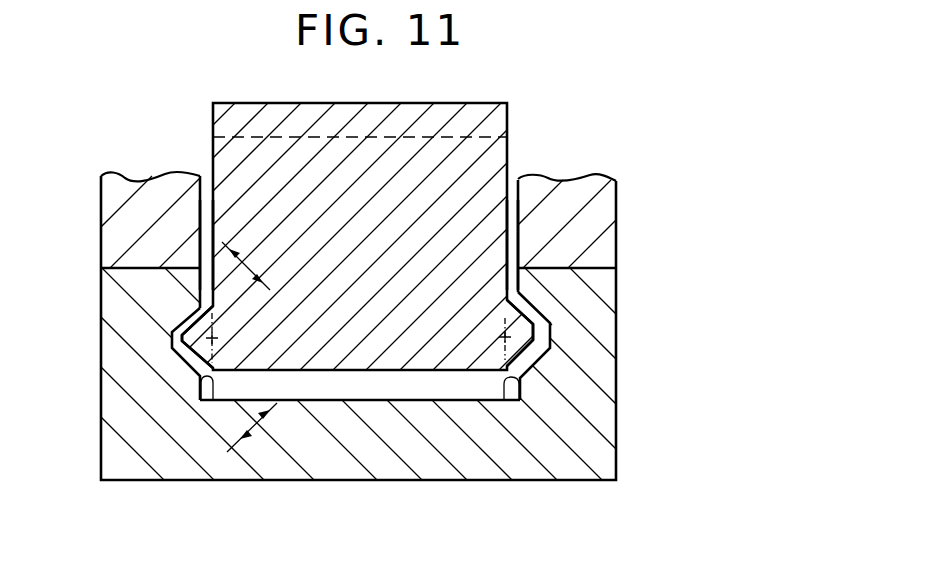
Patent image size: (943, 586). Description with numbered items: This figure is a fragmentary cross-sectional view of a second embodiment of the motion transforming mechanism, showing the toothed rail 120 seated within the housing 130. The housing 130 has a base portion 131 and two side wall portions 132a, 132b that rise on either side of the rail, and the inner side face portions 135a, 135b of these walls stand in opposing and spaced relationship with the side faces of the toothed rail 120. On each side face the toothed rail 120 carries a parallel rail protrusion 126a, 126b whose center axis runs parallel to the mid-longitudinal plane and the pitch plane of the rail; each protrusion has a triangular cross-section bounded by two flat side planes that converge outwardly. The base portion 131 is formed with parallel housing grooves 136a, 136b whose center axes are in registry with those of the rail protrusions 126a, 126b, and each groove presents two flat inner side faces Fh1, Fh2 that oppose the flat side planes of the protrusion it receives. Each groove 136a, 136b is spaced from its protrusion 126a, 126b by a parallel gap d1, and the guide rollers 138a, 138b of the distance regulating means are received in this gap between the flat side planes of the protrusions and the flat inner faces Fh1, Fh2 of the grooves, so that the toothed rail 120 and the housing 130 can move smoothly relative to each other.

The toothed rail 120 is at (506, 147).
The housing 130 is at (648, 245).
The base portion 131 is at (592, 383).
The side wall portion 132a is at (105, 202).
The side wall portion 132b is at (617, 207).
The inner side face portion 135a is at (205, 193).
The inner side face portion 135b is at (515, 188).
The parallel housing groove 136a is at (212, 403).
The parallel housing groove 136b is at (553, 345).
The guide roller 138a is at (172, 322).
The guide roller 138b is at (510, 310).
The parallel rail protrusion 126a is at (222, 340).
The parallel rail protrusion 126b is at (500, 340).
The flat inner side face Fh1 is at (547, 315).
The flat inner side face Fh2 is at (459, 432).
The parallel gap d1 is at (256, 346).